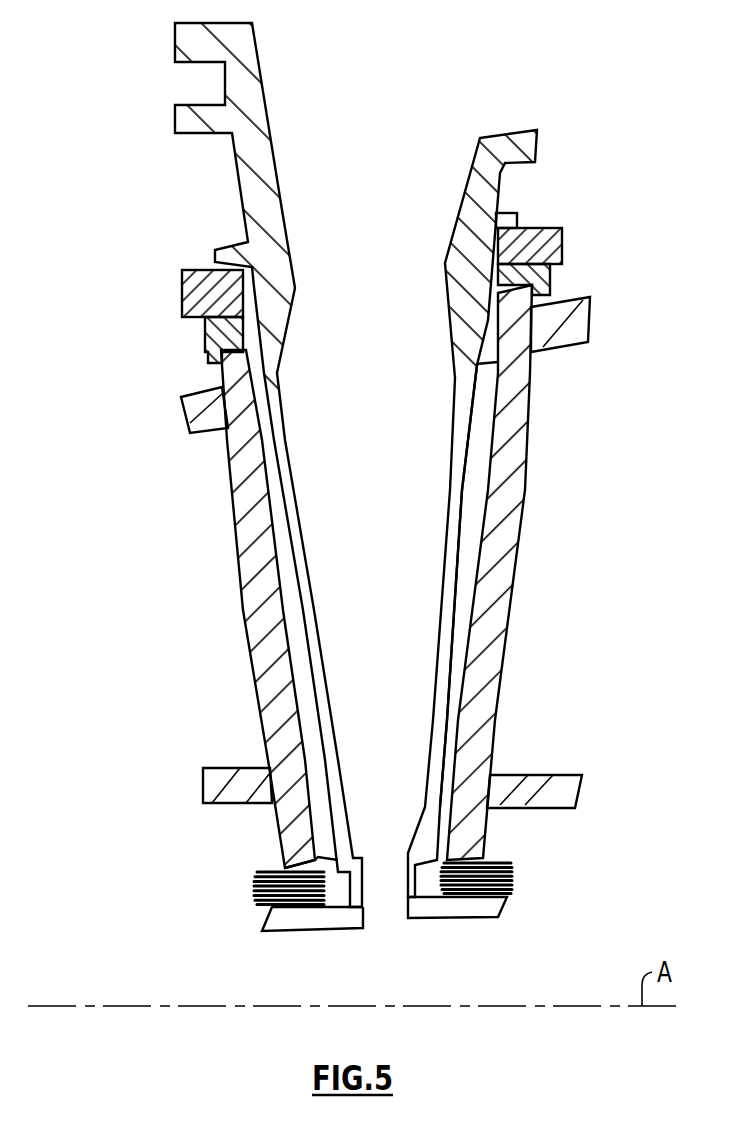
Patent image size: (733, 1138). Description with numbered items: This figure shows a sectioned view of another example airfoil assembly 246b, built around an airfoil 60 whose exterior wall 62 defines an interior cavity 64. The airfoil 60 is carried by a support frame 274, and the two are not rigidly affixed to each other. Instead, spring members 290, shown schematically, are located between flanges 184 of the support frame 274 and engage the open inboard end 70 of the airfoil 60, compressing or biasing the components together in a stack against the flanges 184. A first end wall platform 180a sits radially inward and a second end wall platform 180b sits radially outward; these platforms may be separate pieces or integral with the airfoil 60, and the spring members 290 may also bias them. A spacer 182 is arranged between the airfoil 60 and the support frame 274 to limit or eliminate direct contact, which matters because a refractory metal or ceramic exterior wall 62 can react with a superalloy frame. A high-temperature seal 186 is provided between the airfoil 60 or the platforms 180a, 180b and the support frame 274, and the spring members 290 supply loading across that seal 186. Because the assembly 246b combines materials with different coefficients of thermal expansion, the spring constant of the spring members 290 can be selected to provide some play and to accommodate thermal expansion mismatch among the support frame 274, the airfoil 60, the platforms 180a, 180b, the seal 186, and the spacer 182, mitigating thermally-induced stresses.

The airfoil assembly 246b is at (126, 655).
The airfoil 60 is at (236, 643).
The open inboard end 70 is at (262, 853).
The spring members 290 is at (238, 890).
The flanges 184 is at (506, 213).
The spacer 182 is at (565, 233).
The high-temperature seals 186 is at (550, 279).
The second end wall platform 180b is at (572, 347).
The first end wall platform 180a is at (541, 775).
The interior cavity 64 is at (487, 488).
The support frame 274 is at (481, 567).
The exterior wall 62 is at (510, 644).